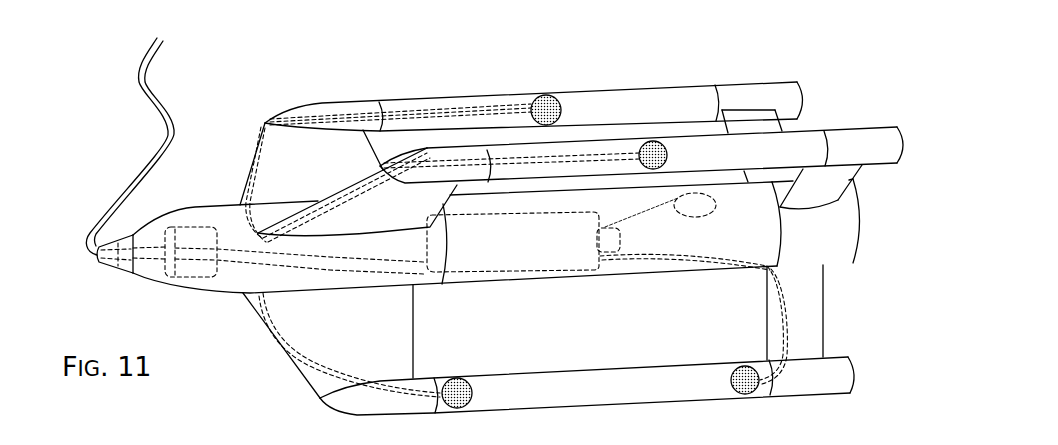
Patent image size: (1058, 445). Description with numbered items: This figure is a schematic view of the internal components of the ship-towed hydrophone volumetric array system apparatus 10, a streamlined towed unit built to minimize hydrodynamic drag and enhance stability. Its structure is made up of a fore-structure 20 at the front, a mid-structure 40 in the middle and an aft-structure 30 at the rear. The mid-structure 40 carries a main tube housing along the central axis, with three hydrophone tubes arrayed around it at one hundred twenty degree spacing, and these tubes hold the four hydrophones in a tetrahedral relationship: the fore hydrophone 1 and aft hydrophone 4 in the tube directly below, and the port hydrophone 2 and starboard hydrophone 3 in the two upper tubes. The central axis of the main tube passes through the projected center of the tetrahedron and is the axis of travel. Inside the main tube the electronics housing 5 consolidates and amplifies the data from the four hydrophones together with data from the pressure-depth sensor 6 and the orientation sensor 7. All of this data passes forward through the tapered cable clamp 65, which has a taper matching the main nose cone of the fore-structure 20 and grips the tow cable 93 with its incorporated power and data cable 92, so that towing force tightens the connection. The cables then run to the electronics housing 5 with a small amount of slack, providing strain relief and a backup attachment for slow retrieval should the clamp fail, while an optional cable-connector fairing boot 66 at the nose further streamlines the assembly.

The ship-towed hydrophone volumetric array system apparatus 10 is at (93, 81).
The fore-structure 20 is at (217, 123).
The aft-structure 30 is at (761, 69).
The mid-structure 40 is at (595, 82).
The fore hydrophone 1 is at (460, 386).
The port hydrophone 2 is at (667, 160).
The starboard hydrophone 3 is at (544, 108).
The aft hydrophone 4 is at (746, 380).
The electronics housing 5 is at (567, 214).
The pressure-depth sensor 6 is at (711, 210).
The orientation sensor 7 is at (617, 250).
The tapered cable clamp 65 is at (148, 262).
The cable-connector fairing boot 66 is at (107, 257).
The power and data cable 92 is at (152, 158).
The tow cable 93 is at (120, 185).